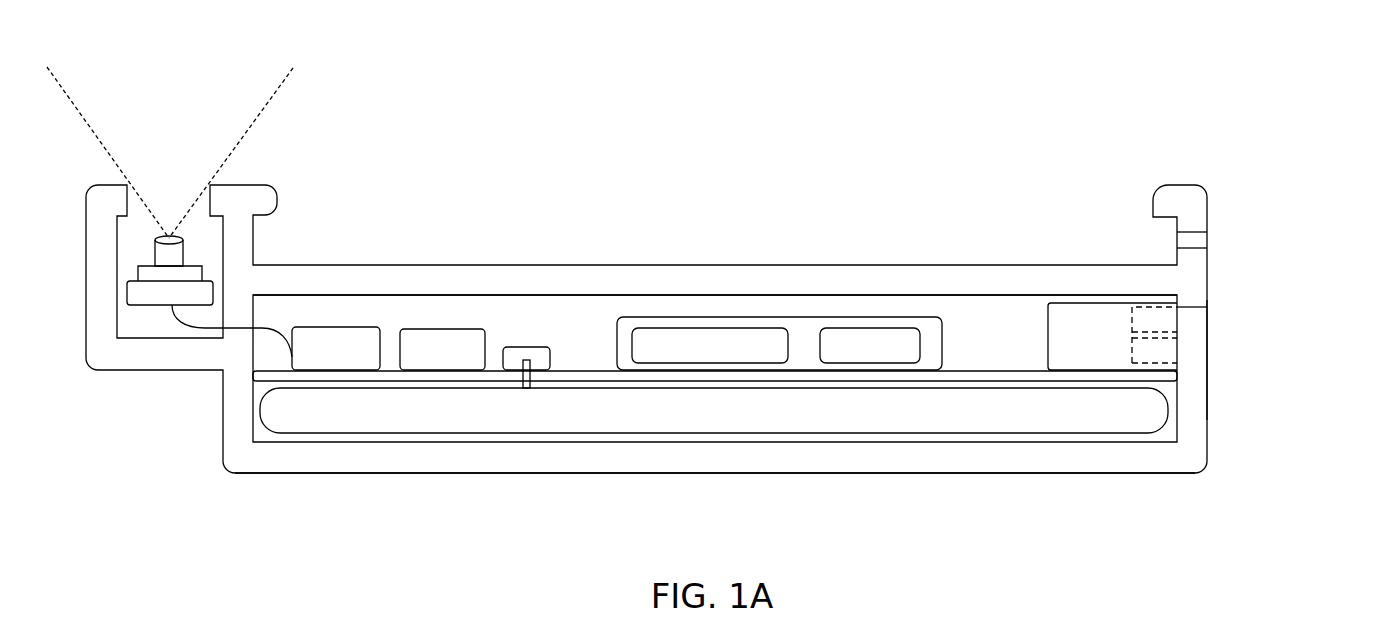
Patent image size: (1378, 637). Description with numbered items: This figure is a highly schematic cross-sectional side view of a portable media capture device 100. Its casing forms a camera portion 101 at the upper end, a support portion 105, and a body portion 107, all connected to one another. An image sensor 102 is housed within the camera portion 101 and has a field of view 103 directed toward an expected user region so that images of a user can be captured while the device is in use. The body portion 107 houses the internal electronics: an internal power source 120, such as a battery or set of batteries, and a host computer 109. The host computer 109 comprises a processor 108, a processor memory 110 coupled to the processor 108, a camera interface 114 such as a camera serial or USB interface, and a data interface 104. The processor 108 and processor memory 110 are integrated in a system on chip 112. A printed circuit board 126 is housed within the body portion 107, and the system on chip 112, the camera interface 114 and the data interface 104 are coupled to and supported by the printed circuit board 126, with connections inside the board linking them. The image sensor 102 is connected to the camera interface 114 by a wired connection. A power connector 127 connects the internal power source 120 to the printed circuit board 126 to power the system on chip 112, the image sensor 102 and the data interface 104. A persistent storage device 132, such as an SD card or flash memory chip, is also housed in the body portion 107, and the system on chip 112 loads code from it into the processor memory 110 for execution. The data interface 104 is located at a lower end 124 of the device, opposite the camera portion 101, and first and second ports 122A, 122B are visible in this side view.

The portable media capture device 100 is at (1213, 146).
The camera portion 101 is at (127, 111).
The image sensor 102 is at (145, 305).
The field of view 103 is at (280, 88).
The data interface 104 is at (1072, 348).
The support portion 105 is at (996, 184).
The body portion 107 is at (617, 490).
The processor 108 is at (692, 337).
The host computer 109 is at (999, 309).
The processor memory 110 is at (903, 337).
The system on chip 112 is at (802, 330).
The camera interface 114 is at (315, 327).
The internal power source 120 is at (388, 407).
The first port 122A is at (1170, 323).
The second port 122B is at (1170, 348).
The lower end 124 is at (1234, 390).
The printed circuit board 126 is at (572, 370).
The power connector 127 is at (513, 352).
The persistent storage device 132 is at (455, 356).